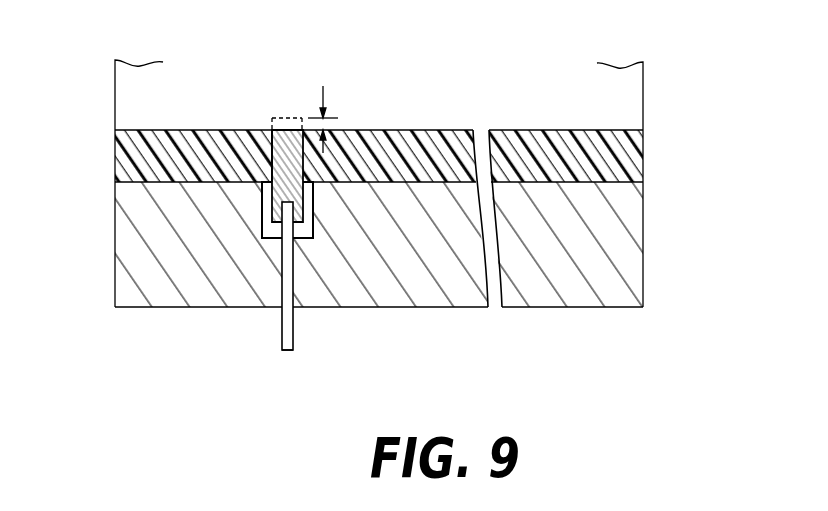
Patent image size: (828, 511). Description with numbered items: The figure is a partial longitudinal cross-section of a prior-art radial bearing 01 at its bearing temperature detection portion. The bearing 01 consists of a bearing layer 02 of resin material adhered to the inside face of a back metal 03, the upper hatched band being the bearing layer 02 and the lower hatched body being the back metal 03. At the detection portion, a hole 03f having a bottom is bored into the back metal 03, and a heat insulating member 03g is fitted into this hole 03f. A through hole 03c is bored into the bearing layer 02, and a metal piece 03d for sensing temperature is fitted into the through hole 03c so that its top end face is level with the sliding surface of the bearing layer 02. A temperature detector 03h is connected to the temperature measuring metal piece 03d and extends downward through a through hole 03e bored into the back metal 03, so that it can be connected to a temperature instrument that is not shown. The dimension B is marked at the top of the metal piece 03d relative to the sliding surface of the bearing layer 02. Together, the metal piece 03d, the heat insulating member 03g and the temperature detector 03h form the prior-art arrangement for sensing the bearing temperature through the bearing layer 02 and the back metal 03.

The radial bearing 01 is at (606, 340).
The bearing layer 02 is at (530, 130).
The back metal 03 is at (157, 308).
The through hole 03c is at (277, 142).
The metal piece 03d is at (280, 169).
The through hole 03e is at (290, 295).
The hole 03f is at (266, 238).
The heat insulating member 03g is at (315, 225).
The temperature detector 03h is at (293, 336).
The protrusion depth B is at (329, 115).